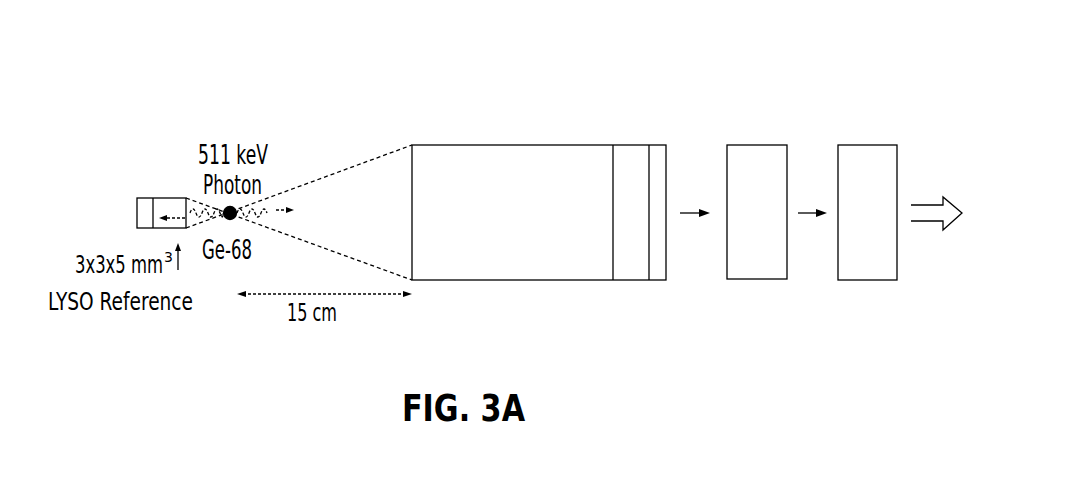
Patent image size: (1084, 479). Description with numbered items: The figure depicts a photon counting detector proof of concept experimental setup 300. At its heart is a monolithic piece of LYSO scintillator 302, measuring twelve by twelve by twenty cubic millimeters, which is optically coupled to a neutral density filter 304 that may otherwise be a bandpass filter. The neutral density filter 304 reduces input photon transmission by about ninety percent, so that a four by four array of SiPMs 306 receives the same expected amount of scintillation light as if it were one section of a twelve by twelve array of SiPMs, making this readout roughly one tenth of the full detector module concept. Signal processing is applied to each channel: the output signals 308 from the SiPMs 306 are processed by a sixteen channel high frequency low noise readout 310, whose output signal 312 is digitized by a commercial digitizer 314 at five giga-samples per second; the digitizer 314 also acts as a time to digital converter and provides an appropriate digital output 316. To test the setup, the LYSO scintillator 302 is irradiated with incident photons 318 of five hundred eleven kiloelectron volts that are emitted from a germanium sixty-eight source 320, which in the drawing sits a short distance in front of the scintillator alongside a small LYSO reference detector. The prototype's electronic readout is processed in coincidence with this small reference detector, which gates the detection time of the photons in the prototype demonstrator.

The photon counting detector proof of concept experimental setup 300 is at (140, 60).
The LYSO scintillator 302 is at (508, 142).
The neutral density filter 304 is at (632, 142).
The array of SiPMs 306 is at (657, 142).
The output signals 308 is at (695, 262).
The high frequency low noise readout 310 is at (756, 143).
The output signal 312 is at (803, 262).
The digitizer 314 is at (856, 143).
The digital output 316 is at (918, 222).
The incident photons 318 is at (283, 172).
The Ge-68 source 320 is at (236, 219).